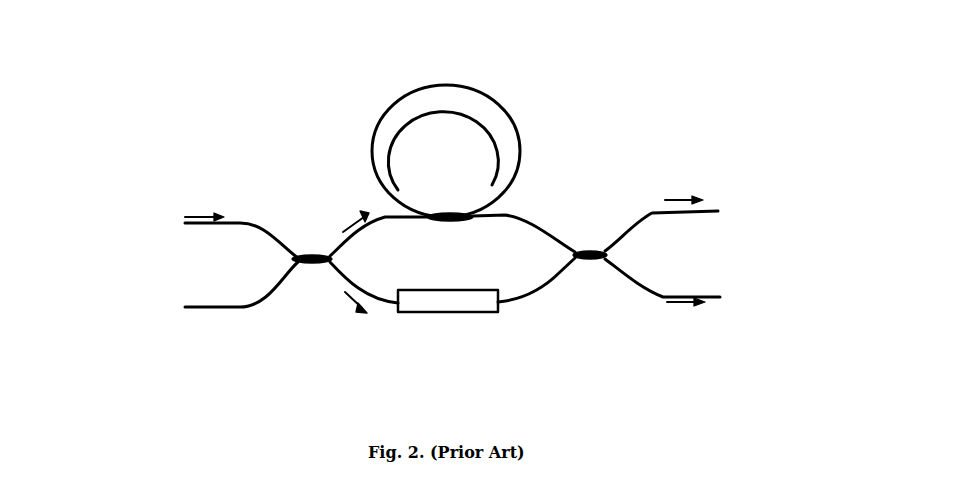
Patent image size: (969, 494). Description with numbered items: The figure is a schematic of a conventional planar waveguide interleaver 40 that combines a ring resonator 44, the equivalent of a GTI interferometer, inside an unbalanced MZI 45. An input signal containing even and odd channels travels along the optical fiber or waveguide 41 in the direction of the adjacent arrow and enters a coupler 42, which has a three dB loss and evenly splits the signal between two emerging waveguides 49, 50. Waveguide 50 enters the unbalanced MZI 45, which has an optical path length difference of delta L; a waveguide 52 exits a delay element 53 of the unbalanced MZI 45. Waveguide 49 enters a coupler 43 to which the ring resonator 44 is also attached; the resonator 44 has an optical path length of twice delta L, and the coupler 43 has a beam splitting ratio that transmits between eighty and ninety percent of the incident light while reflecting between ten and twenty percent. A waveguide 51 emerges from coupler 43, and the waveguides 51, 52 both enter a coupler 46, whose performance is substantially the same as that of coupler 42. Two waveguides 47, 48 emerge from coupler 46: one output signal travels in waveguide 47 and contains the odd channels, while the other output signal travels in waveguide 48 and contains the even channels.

The planar waveguide interleaver 40 is at (315, 35).
The optical fiber or waveguide 41 is at (200, 223).
The coupler 42 is at (315, 268).
The coupler 43 is at (450, 220).
The ring resonator 44 is at (480, 88).
The unbalanced MZI 45 is at (472, 267).
The coupler 46 is at (594, 250).
The waveguide 47 is at (696, 210).
The waveguide 48 is at (705, 297).
The waveguide 49 is at (355, 234).
The waveguide 50 is at (352, 283).
The waveguide 51 is at (543, 235).
The waveguide 52 is at (537, 287).
The delay element 53 is at (438, 312).